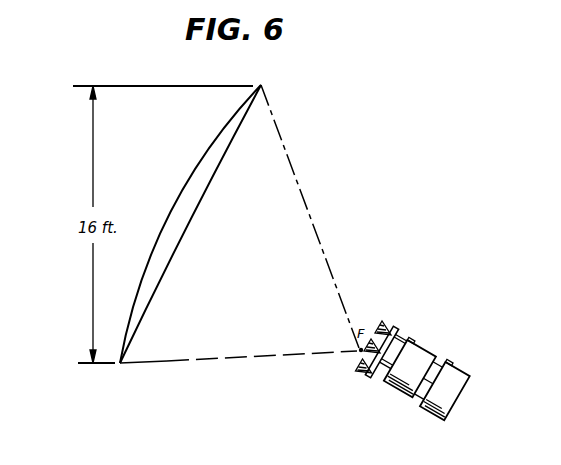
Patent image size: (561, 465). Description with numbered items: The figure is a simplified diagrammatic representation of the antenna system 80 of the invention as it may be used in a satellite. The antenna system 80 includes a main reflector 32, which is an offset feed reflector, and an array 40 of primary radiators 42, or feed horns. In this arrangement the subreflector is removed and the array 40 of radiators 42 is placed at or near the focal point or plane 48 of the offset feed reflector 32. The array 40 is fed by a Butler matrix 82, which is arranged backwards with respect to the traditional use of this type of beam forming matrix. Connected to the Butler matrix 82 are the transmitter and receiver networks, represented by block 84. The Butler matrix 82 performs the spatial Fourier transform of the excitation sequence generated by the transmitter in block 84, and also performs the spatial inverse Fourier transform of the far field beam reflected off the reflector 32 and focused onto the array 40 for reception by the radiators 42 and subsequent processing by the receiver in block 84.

The main reflector 32 is at (187, 184).
The antenna system 80 is at (406, 172).
The radiators 42 is at (382, 321).
The focal point or plane 48 is at (354, 358).
The array 40 is at (362, 386).
The Butler matrix 82 is at (414, 356).
The transmitter and receiver networks 84 is at (452, 378).